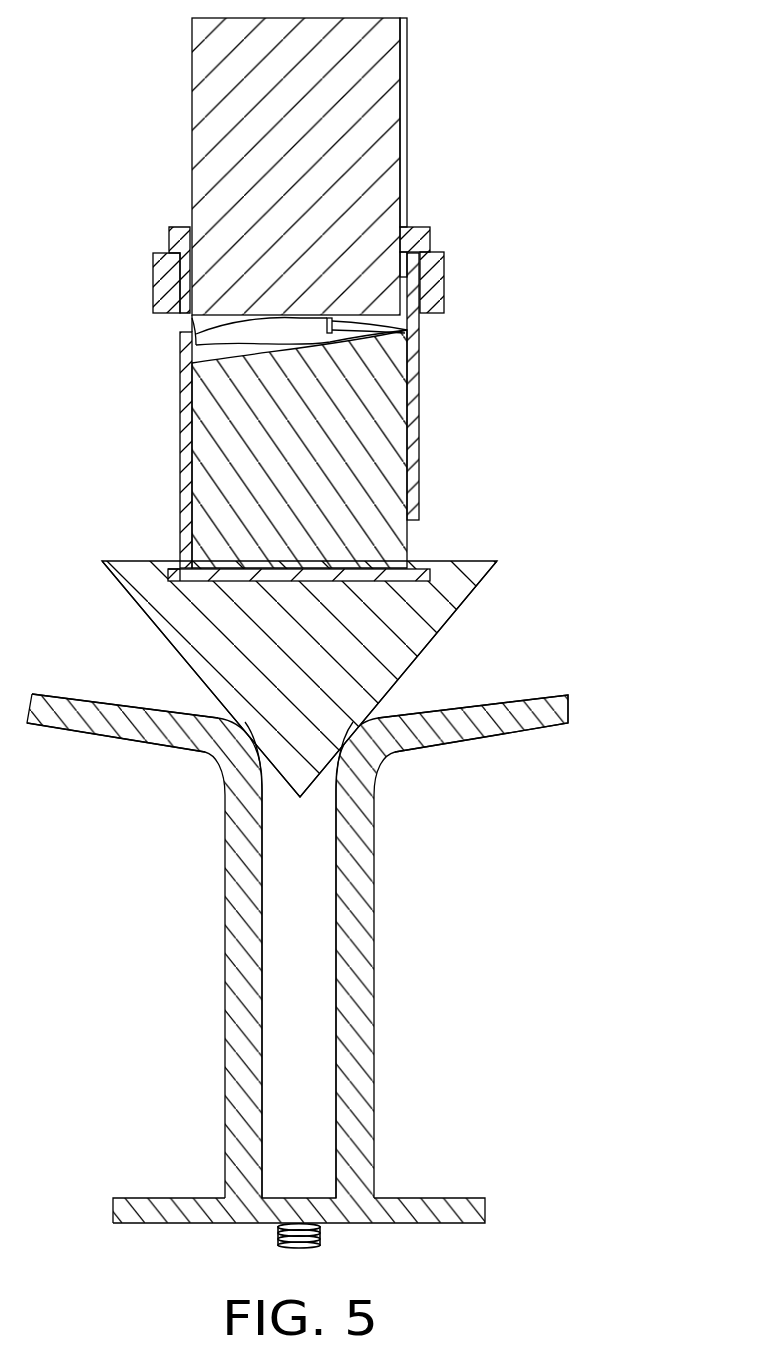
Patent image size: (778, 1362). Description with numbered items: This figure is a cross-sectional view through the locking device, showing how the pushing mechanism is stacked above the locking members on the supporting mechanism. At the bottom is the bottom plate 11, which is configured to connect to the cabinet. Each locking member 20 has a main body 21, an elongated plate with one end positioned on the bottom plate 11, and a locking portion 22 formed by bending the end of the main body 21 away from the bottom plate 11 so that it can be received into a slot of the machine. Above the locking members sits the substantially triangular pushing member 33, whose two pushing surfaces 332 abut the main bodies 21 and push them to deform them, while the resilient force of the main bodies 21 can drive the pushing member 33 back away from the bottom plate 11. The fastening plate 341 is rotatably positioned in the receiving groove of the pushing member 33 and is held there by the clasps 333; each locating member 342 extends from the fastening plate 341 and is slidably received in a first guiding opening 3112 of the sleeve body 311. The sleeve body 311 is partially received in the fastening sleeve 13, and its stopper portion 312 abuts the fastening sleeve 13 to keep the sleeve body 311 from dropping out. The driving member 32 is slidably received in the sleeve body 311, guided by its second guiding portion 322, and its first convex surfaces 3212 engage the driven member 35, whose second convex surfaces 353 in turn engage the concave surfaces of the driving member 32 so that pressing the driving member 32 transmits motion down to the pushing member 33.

The bottom plate 11 is at (442, 1200).
The fastening sleeve 13 is at (440, 290).
The locking member 20 is at (230, 960).
The main body 21 is at (358, 944).
The locking portion 22 is at (552, 715).
The driving member 32 is at (220, 123).
The pushing member 33 is at (443, 602).
The driven member 35 is at (390, 456).
The sleeve body 311 is at (415, 393).
The stopper portion 312 is at (180, 235).
The second guiding portion 322 is at (415, 141).
The pushing surface 332 is at (172, 654).
The clasp 333 is at (177, 565).
The fastening plate 341 is at (172, 576).
The locating member 342 is at (182, 465).
The second convex surface 353 is at (217, 343).
The first guiding opening 3112 is at (175, 320).
The first convex surface 3212 is at (215, 323).